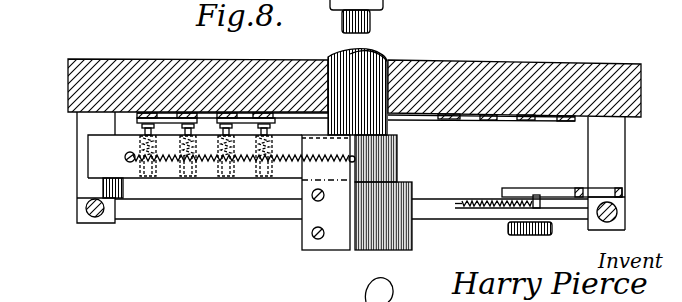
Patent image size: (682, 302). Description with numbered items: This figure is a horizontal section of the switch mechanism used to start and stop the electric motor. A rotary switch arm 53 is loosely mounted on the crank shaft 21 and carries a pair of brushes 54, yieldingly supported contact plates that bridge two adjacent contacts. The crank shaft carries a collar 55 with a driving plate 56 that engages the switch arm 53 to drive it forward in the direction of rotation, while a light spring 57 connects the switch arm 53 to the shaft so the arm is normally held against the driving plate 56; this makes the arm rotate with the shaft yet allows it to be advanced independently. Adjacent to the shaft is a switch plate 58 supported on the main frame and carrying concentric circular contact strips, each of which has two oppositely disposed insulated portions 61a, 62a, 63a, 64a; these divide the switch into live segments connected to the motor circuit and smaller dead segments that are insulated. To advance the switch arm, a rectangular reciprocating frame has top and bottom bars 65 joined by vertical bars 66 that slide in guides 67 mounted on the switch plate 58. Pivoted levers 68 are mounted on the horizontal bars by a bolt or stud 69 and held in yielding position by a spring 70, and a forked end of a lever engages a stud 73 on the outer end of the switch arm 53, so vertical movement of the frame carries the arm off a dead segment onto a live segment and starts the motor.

The crank shaft 21 is at (363, 90).
The rotary switch arm 53 is at (203, 172).
The brushes 54 is at (268, 134).
The collar 55 is at (383, 235).
The driving plate 56 is at (330, 238).
The light spring 57 is at (288, 166).
The switch plate 58 is at (530, 82).
The insulated portion 61a is at (147, 113).
The insulated portion 62a is at (192, 113).
The insulated portion 63a is at (222, 113).
The insulated portion 64a is at (266, 113).
The top and bottom bars 65 is at (158, 208).
The vertical bars 66 is at (96, 214).
The guides 67 is at (90, 130).
The pivoted levers 68 is at (538, 193).
The bolt or stud 69 is at (532, 233).
The spring 70 is at (497, 200).
The stud 73 is at (105, 188).